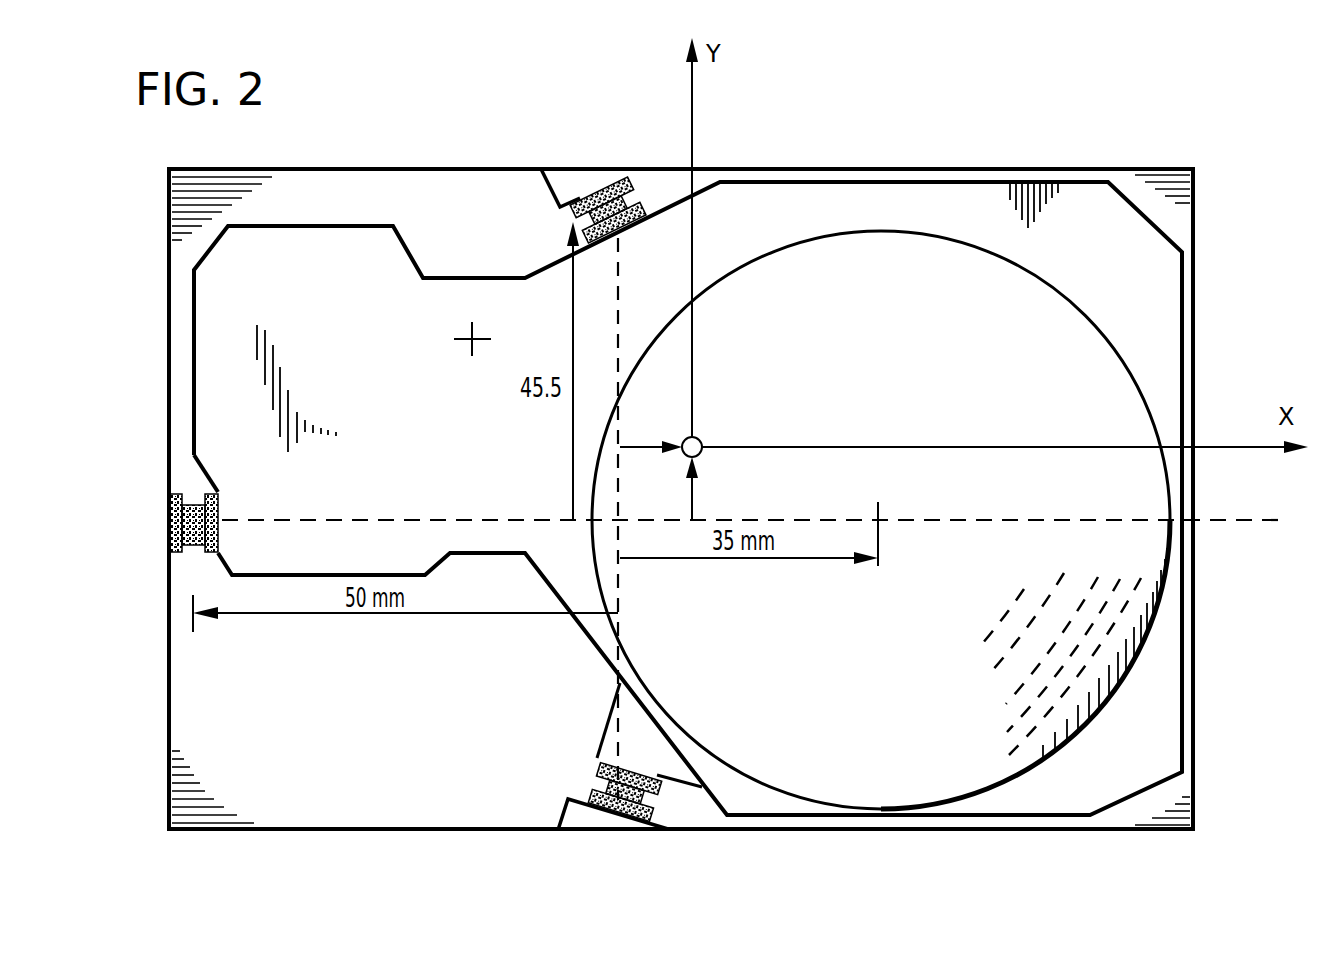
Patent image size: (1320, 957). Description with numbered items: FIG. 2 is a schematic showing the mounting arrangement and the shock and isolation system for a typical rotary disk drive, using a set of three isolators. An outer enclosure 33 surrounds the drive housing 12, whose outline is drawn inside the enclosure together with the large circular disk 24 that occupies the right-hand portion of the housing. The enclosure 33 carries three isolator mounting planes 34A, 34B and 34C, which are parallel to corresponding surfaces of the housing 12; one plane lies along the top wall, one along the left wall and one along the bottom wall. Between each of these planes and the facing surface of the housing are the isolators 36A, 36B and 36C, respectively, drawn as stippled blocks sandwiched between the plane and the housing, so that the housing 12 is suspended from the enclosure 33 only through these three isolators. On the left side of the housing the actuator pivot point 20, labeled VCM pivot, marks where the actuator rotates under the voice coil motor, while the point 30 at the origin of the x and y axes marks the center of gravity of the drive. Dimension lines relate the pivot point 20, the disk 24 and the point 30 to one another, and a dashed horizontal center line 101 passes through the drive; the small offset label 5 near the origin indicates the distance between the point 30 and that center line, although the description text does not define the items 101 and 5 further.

The housing 12 is at (590, 645).
The pivot point 20 is at (452, 348).
The disk 24 is at (906, 327).
The center of gravity point 30 is at (699, 440).
The enclosure 33 is at (1193, 223).
The isolator mounting plane 34A is at (572, 178).
The isolator mounting plane 34B is at (170, 526).
The isolator mounting plane 34C is at (588, 820).
The isolator 36A is at (637, 193).
The isolator 36B is at (190, 490).
The isolator 36C is at (598, 782).
The center line 101 is at (755, 540).
The offset dimension 5 is at (659, 480).